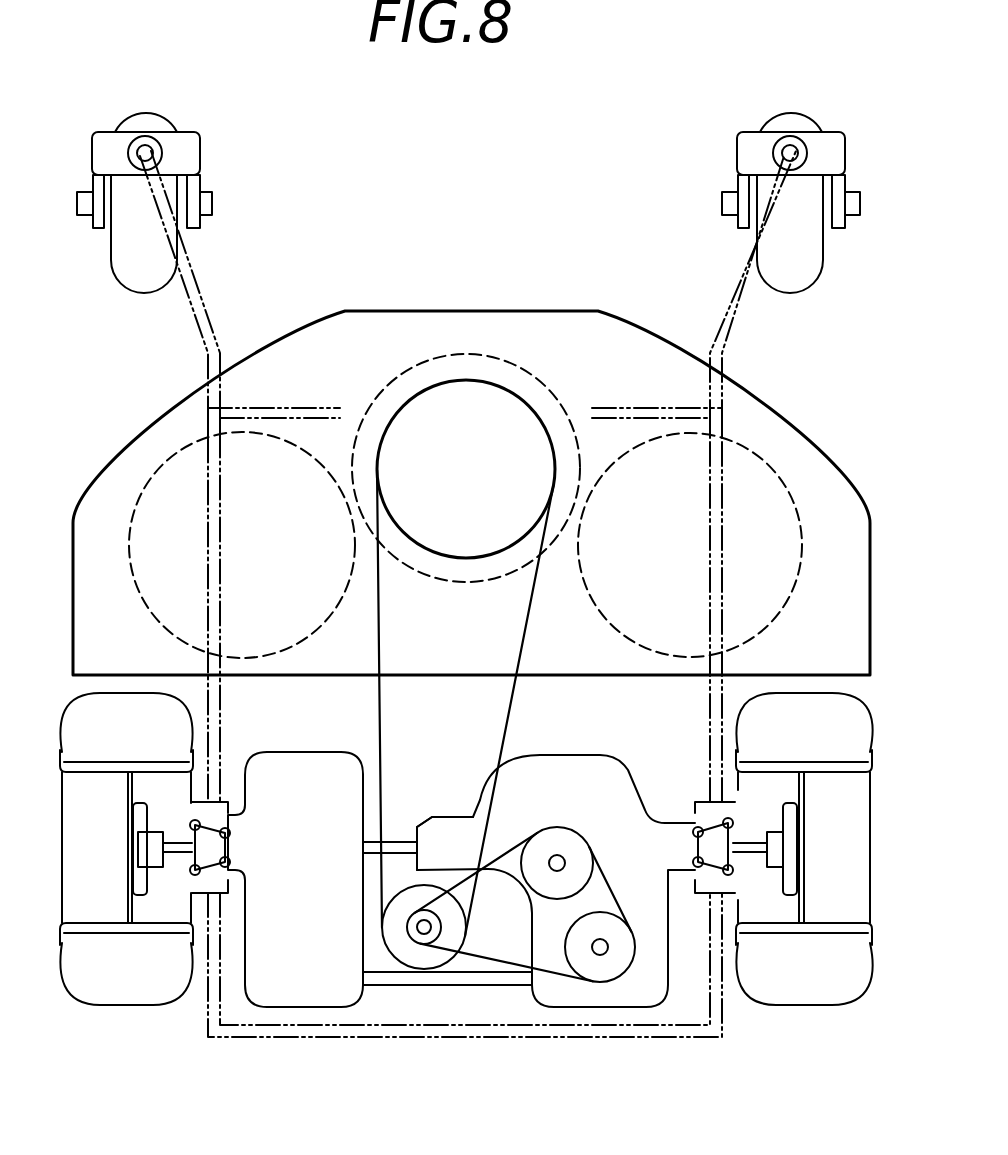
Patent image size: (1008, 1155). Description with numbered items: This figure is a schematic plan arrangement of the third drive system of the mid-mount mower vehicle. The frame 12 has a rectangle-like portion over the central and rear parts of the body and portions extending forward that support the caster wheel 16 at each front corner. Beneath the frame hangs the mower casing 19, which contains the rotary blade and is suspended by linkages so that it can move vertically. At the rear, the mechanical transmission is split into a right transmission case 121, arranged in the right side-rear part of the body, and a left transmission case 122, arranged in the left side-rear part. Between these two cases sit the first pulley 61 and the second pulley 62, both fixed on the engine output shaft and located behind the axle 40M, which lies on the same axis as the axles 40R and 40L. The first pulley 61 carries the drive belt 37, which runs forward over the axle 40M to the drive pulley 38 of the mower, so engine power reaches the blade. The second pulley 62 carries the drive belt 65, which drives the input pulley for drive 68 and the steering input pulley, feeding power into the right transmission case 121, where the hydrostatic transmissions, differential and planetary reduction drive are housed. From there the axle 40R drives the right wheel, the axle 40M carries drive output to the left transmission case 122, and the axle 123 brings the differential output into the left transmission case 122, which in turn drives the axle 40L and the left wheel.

The frame 12 is at (270, 1040).
The caster wheel 16 is at (135, 273).
The casing 19 is at (797, 453).
The drive belt 37 is at (377, 592).
The drive pulley 38 is at (468, 430).
The axle 40L is at (150, 847).
The axle 40R is at (757, 848).
The axle 40M is at (395, 840).
The first pulley 61 is at (398, 938).
The second pulley 62 is at (422, 940).
The drive belt 65 is at (617, 932).
The input pulley for drive 68 is at (545, 842).
The right transmission case 121 is at (625, 990).
The left transmission case 122 is at (312, 858).
The axle 123 is at (495, 985).